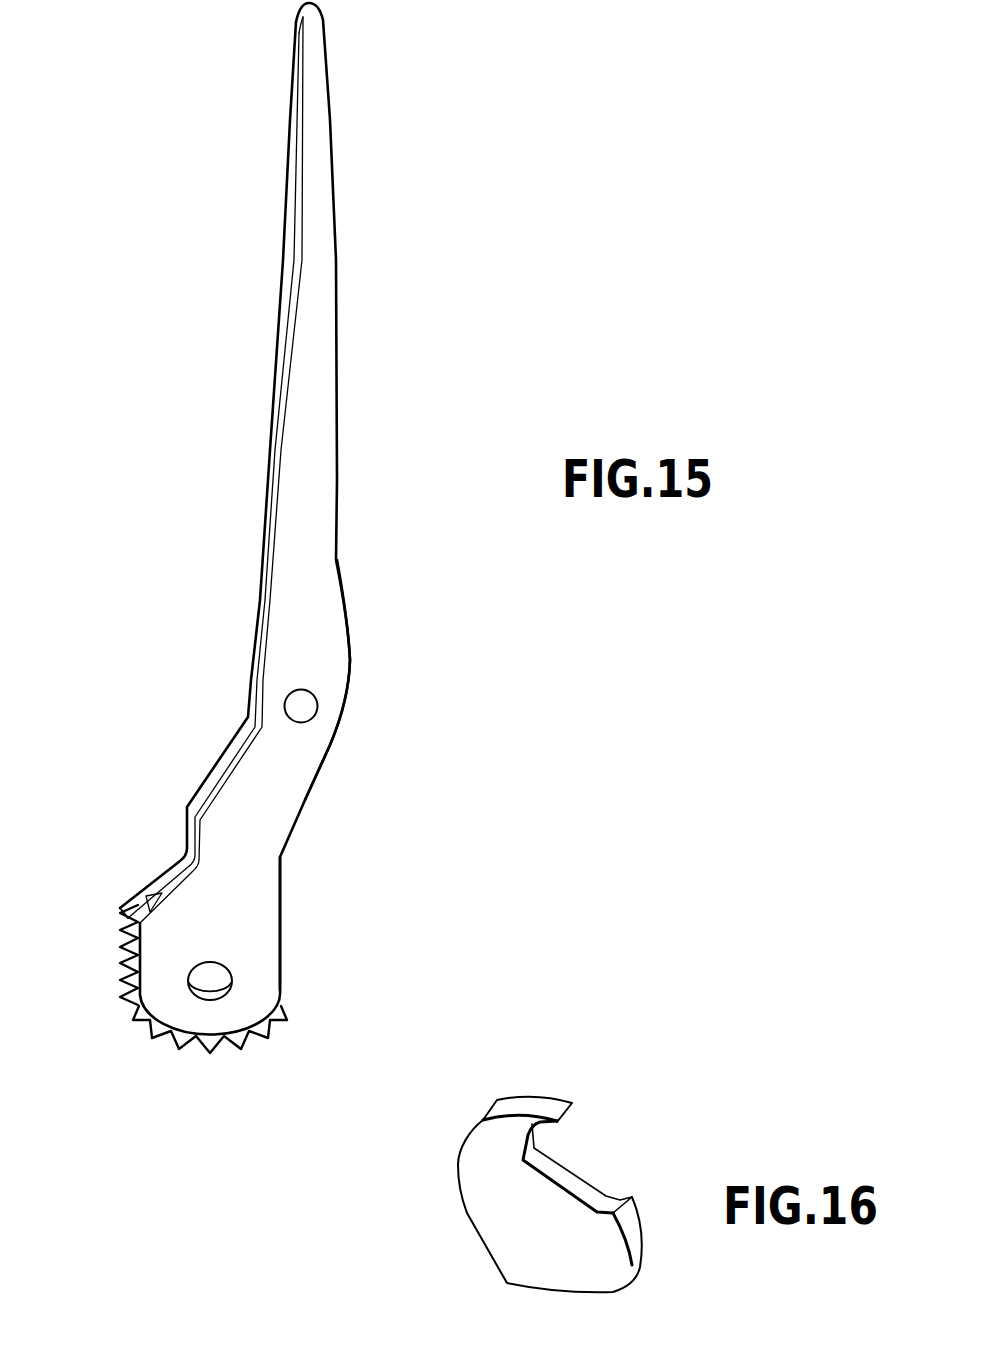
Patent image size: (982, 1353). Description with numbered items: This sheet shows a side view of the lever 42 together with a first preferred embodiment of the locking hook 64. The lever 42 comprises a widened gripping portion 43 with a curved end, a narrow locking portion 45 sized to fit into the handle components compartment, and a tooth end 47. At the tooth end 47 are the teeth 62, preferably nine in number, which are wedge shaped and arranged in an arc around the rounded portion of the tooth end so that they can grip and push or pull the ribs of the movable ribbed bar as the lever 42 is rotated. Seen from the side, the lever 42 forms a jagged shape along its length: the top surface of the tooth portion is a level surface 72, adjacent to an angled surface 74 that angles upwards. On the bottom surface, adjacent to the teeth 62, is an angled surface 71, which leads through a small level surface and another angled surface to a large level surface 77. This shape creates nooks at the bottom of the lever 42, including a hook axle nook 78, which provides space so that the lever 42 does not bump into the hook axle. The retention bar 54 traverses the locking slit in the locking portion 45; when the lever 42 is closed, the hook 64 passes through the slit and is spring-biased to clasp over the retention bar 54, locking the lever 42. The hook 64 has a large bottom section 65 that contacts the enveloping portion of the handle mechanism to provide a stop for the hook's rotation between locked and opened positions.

In FIG. 15, the lever 42 is at (413, 378).
In FIG. 15, the widened gripping portion 43 is at (324, 115).
In FIG. 15, the narrow locking portion 45 is at (338, 652).
In FIG. 15, the angled surface 74 is at (315, 745).
In FIG. 15, the retention bar 54 is at (295, 703).
In FIG. 15, the hook axle nook 78 is at (233, 724).
In FIG. 15, the large level surface 77 is at (178, 864).
In FIG. 15, the angled surface 71 is at (122, 910).
In FIG. 15, the level surface 72 is at (283, 927).
In FIG. 15, the tooth end 47 is at (283, 990).
In FIG. 15, the teeth 62 is at (165, 1037).
In FIG. 16, the large bottom section 65 is at (512, 1235).
In FIG. 16, the hook 64 is at (625, 1237).